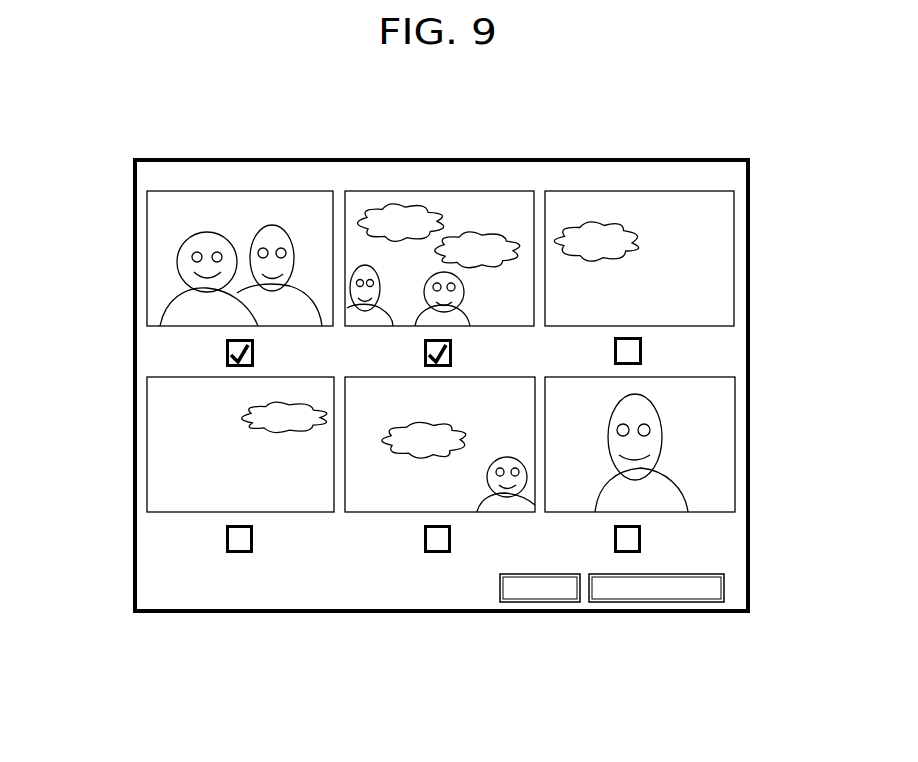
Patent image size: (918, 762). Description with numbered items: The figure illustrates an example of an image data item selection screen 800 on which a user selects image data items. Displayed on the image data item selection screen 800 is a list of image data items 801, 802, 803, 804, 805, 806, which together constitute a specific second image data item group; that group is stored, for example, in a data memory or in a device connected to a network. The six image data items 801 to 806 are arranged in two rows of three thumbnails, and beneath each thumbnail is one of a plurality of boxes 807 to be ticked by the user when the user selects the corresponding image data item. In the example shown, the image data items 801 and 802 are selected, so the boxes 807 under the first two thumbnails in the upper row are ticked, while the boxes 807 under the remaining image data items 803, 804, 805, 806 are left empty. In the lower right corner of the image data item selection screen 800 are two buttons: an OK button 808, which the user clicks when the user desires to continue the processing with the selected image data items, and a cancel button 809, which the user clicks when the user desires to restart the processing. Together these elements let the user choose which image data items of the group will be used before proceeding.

The image data item selection screen 800 is at (135, 236).
The image data item 801 is at (287, 190).
The image data item 802 is at (490, 190).
The image data item 803 is at (689, 190).
The image data item 804 is at (173, 512).
The image data item 805 is at (372, 512).
The image data item 806 is at (688, 512).
The box 807 is at (228, 347).
The OK button 808 is at (567, 602).
The cancel button 809 is at (708, 602).